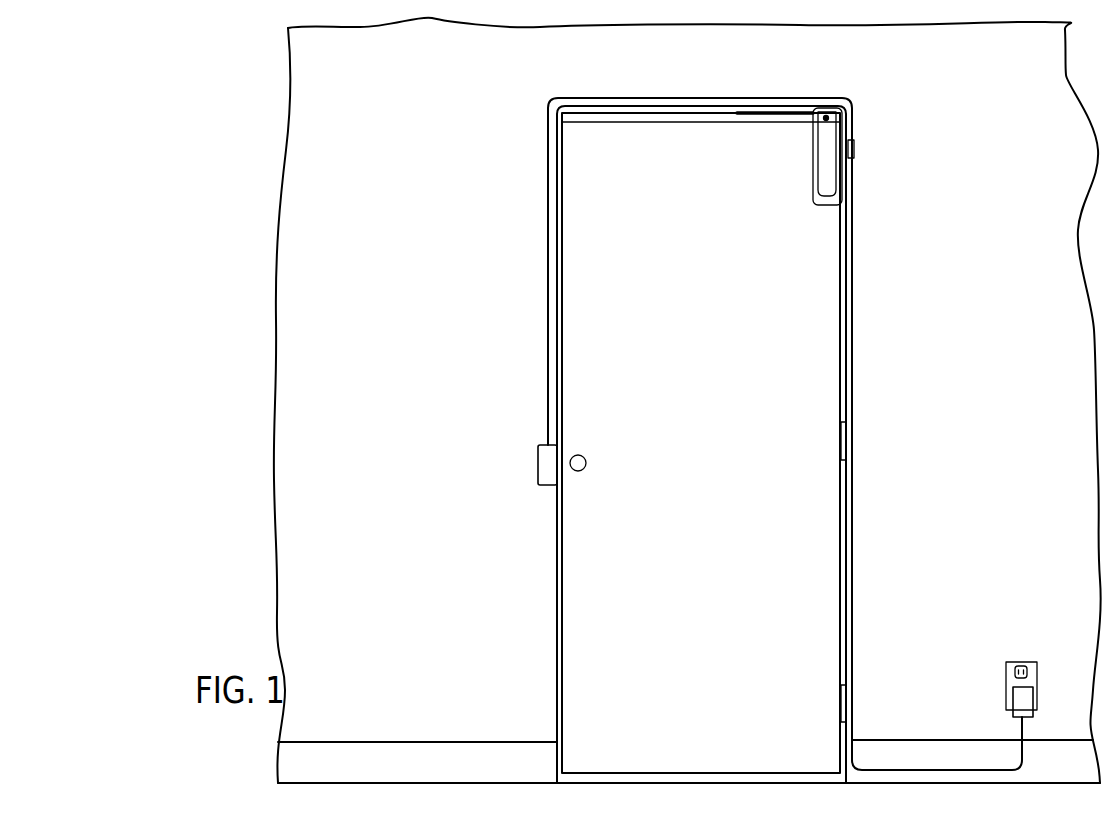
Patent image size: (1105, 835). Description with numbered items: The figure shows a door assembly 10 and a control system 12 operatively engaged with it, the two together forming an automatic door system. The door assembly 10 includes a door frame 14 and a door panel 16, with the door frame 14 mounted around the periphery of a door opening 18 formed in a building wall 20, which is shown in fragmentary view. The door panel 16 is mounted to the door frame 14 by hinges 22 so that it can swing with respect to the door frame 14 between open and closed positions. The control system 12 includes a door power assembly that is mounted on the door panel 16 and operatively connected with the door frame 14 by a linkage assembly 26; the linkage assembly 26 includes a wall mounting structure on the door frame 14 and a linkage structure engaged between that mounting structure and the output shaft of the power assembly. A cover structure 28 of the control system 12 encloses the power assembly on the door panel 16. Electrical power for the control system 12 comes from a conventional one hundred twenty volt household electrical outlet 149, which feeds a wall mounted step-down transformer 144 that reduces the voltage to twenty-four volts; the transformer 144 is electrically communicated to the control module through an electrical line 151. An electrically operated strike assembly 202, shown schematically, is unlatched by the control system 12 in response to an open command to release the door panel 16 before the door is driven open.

The door assembly 10 is at (755, 415).
The control system 12 is at (756, 415).
The door frame 14 is at (683, 110).
The door panel 16 is at (790, 312).
The door opening 18 is at (598, 233).
The building wall 20 is at (307, 292).
The hinges 22 is at (845, 438).
The linkage assembly 26 is at (768, 110).
The cover structure 28 is at (830, 130).
The electrical line 151 is at (853, 632).
The step-down transformer 144 is at (1018, 698).
The household electrical outlet 149 is at (1025, 663).
The electrically operated strike assembly 202 is at (547, 462).